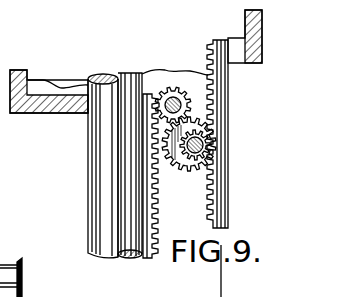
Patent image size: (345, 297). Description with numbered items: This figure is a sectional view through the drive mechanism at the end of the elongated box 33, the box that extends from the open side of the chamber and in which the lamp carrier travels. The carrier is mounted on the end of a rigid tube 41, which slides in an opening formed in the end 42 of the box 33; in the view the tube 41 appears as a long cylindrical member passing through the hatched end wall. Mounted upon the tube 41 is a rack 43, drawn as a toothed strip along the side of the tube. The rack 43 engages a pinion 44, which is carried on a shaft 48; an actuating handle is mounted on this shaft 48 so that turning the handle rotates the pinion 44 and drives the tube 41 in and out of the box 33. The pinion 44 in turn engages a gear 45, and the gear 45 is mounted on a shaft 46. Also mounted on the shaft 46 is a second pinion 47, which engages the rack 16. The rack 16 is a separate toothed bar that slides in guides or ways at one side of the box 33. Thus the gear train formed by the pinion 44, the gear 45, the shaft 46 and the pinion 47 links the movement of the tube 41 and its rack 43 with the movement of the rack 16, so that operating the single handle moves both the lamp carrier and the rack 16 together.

The rack 16 is at (220, 175).
The elongated box 33 is at (72, 76).
The rigid tube 41 is at (108, 180).
The end of the box 42 is at (50, 108).
The rack 43 is at (153, 220).
The pinion 44 is at (183, 97).
The gear 45 is at (205, 124).
The shaft 46 is at (203, 143).
The pinion 47 is at (210, 157).
The shaft 48 is at (184, 96).